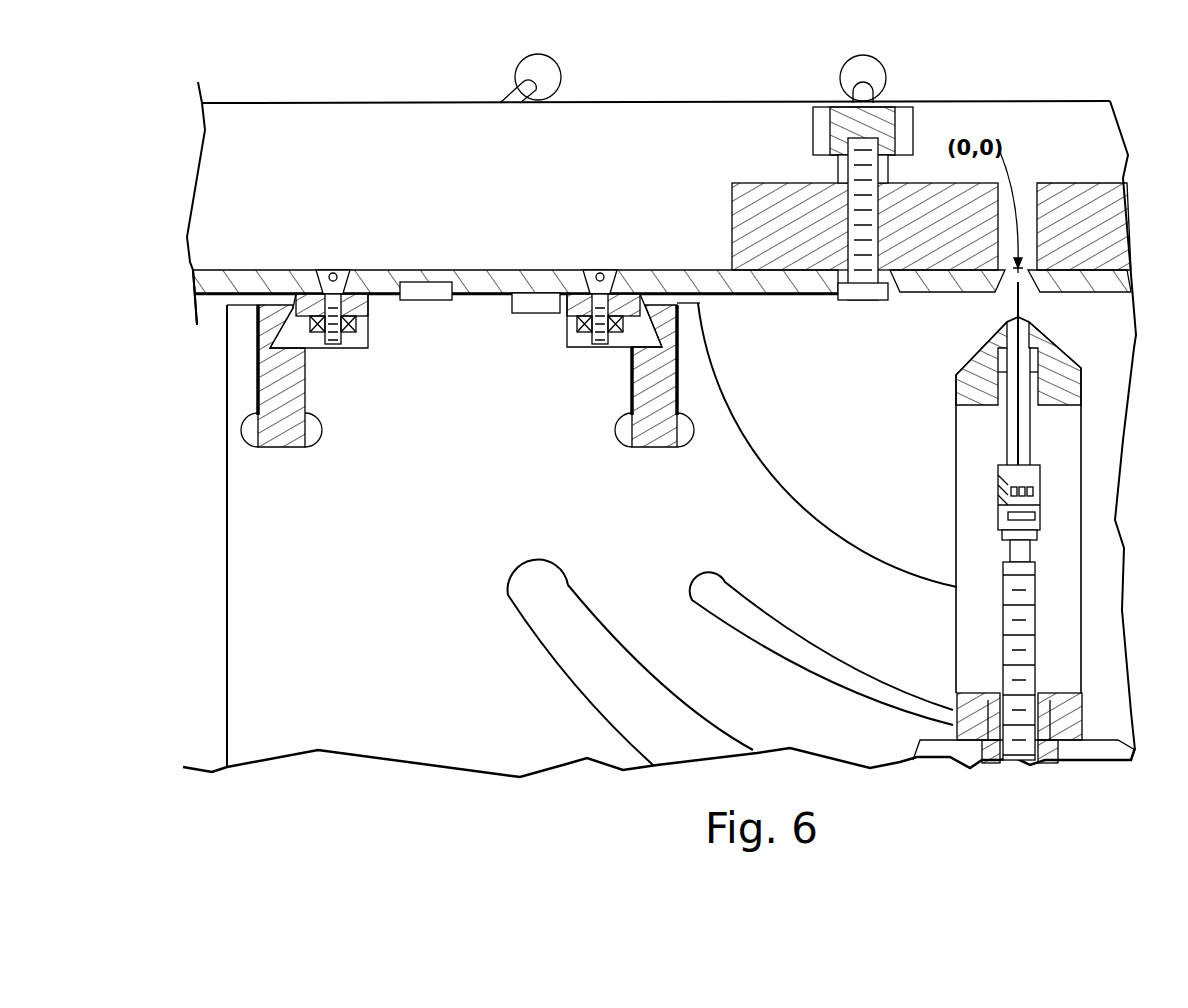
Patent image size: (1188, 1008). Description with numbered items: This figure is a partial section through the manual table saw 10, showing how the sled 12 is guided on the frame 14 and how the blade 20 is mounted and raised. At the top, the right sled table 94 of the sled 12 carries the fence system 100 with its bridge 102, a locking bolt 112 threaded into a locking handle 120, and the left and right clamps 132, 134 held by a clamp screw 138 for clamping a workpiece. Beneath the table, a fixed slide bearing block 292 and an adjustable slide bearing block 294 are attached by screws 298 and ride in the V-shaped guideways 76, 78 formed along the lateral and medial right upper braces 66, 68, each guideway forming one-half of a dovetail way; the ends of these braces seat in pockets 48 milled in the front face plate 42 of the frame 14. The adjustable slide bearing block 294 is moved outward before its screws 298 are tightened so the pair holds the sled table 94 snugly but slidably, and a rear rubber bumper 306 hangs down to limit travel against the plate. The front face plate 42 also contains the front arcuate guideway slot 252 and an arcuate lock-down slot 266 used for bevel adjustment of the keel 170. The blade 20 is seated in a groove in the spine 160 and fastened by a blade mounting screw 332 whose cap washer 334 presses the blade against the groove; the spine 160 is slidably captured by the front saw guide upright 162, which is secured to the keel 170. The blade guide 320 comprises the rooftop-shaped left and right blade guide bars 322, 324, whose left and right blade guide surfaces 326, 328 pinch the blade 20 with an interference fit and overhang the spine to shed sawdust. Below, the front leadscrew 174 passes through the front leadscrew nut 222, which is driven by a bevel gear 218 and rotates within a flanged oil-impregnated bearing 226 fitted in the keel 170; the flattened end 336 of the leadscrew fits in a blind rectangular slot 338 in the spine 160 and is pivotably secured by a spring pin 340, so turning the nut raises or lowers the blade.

The table saw 10 is at (262, 78).
The sled 12 is at (212, 322).
The frame 14 is at (213, 463).
The blade 20 is at (1012, 300).
The front face plate 42 is at (757, 510).
The pockets 48 is at (312, 435).
The lateral right upper brace 66 is at (290, 390).
The medial right upper brace 68 is at (652, 432).
The V-shaped guideway 76 is at (290, 341).
The V-shaped guideway 78 is at (648, 338).
The right sled table 94 is at (500, 278).
The fence system 100 is at (1052, 78).
The bridge 102 is at (580, 100).
The locking bolt 112 is at (420, 296).
The locking handle 120 is at (520, 72).
The left clamp 132 is at (1072, 190).
The right clamp 134 is at (778, 185).
The clamp screw 138 is at (880, 120).
The spine 160 is at (1040, 478).
The front saw guide upright 162 is at (978, 455).
The keel 170 is at (967, 715).
The front leadscrew 174 is at (1018, 593).
The bevel gear 218 is at (1000, 762).
The front leadscrew nut 222 is at (1043, 760).
The flanged oil-impregnated bearing 226 is at (1080, 716).
The front arcuate guideway slot 252 is at (660, 712).
The arcuate lock-down slot 266 is at (730, 617).
The fixed slide bearing block 292 is at (577, 338).
The adjustable slide bearing block 294 is at (360, 338).
The screw 298 is at (340, 270).
The rear rubber bumper 306 is at (533, 307).
The blade guide 320 is at (968, 398).
The left blade guide bar 322 is at (1067, 373).
The right blade guide bar 324 is at (968, 368).
The left blade guide surface 326 is at (1008, 325).
The right blade guide surface 328 is at (1026, 325).
The blade mounting screw 332 is at (1010, 500).
The cap washer 334 is at (1012, 476).
The flattened end 336 is at (1017, 547).
The blind rectangular slot 338 is at (1040, 498).
The spring pin 340 is at (1003, 522).